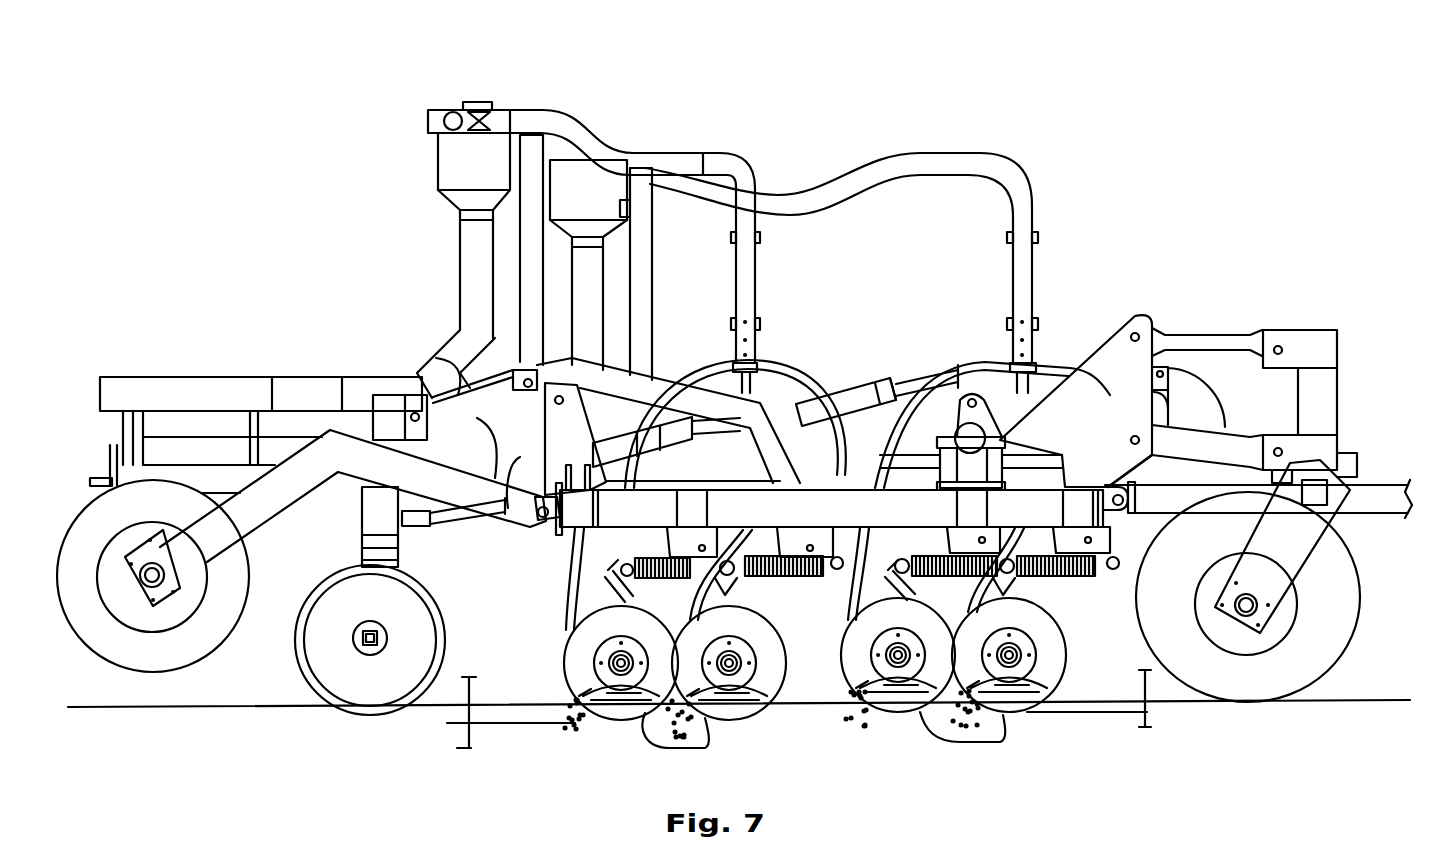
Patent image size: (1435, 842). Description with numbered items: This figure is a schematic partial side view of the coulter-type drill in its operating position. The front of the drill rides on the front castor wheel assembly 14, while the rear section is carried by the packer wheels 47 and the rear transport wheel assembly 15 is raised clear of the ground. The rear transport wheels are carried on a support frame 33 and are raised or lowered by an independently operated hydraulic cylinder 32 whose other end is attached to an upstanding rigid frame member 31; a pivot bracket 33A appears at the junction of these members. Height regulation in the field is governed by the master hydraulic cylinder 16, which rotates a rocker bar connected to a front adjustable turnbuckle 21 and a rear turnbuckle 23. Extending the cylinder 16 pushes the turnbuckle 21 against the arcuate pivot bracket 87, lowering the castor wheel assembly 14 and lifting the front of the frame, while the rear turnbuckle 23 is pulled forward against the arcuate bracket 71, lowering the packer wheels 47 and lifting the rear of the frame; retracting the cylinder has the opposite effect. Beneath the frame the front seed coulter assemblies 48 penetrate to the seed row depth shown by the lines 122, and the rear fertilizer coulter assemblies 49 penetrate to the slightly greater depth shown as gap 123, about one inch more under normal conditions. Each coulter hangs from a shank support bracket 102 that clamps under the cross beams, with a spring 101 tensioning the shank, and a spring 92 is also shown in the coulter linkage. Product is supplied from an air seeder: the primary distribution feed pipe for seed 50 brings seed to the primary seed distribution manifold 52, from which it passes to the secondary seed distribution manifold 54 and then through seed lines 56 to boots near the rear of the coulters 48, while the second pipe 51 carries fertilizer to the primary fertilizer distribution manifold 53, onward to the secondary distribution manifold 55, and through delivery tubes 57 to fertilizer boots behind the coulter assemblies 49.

The front castor wheel assembly 14 is at (1330, 554).
The rear transport wheel assembly 15 is at (228, 588).
The hydraulic cylinder 16 is at (880, 395).
The front adjustable elongate turnbuckle 21 is at (1053, 385).
The rear turnbuckle 23 is at (850, 393).
The upstanding rigid frame member 31 is at (637, 393).
The hydraulic cylinder 32 is at (465, 372).
The support frame 33 is at (262, 505).
The pivot bracket 33A is at (540, 516).
The packer wheel 47 is at (442, 613).
The seed coulter assembly 48 is at (1005, 742).
The fertilizer coulter assembly 49 is at (706, 748).
The primary distribution feed pipe for seed 50 is at (162, 427).
The second pipe 51 is at (236, 397).
The primary seed distribution manifold 52 is at (608, 128).
The primary fertilizer distribution manifold 53 is at (432, 115).
The secondary seed distribution manifold 54 is at (1040, 363).
The secondary distribution manifold 55 is at (765, 363).
The seed line 56 is at (945, 400).
The delivery tube 57 is at (660, 624).
The arcuate bracket 71 is at (512, 520).
The arcuate pivot bracket 87 is at (1195, 412).
The tension spring 92 is at (1050, 652).
The spring 101 is at (1042, 577).
The shank support bracket 102 is at (1105, 543).
The seed row depth 122 is at (1150, 706).
The fertilizer coulter depth gap 123 is at (460, 713).